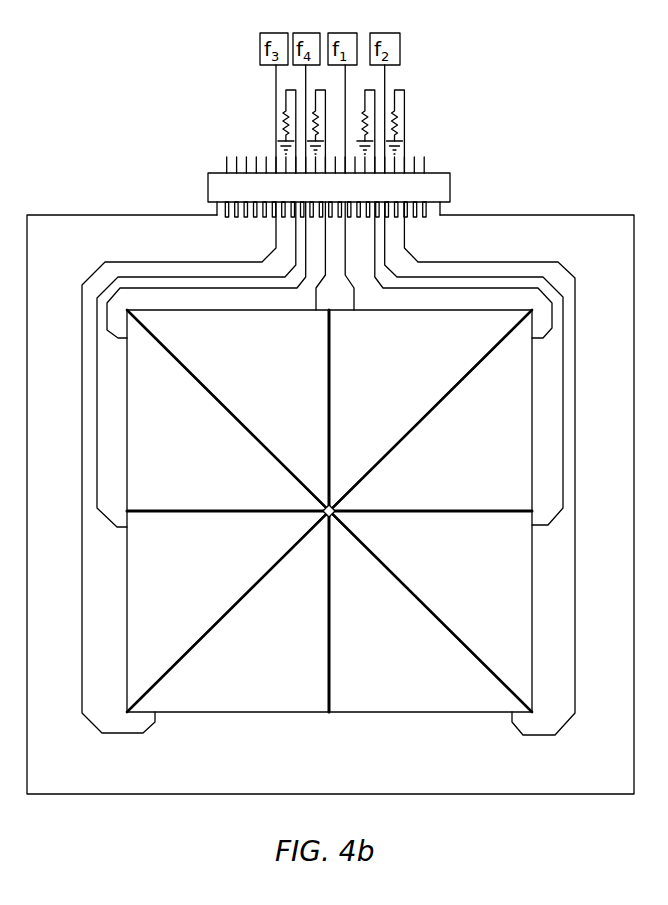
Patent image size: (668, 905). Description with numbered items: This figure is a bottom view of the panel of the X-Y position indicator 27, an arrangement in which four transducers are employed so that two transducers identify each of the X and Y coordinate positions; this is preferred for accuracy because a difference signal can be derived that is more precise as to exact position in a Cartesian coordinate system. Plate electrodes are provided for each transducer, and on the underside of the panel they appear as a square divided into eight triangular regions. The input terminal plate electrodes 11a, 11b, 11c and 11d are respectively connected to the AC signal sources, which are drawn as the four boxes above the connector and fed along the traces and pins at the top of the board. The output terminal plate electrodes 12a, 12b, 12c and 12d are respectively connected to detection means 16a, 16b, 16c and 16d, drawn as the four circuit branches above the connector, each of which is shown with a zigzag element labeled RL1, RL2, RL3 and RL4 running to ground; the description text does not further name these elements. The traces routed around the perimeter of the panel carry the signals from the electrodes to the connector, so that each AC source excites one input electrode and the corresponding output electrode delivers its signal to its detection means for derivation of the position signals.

The X-Y position indicator 27 is at (157, 196).
The input terminal plate electrode 11a is at (433, 330).
The input terminal plate electrode 11b is at (508, 588).
The input terminal plate electrode 11c is at (275, 693).
The input terminal plate electrode 11d is at (135, 427).
The output terminal plate electrode 12a is at (232, 328).
The output terminal plate electrode 12b is at (518, 430).
The output terminal plate electrode 12c is at (425, 692).
The output terminal plate electrode 12d is at (145, 575).
The detection means 16a is at (286, 110).
The detection means 16b is at (363, 103).
The detection means 16c is at (397, 100).
The detection means 16d is at (314, 103).
The load resistor RL1 is at (315, 117).
The load resistor RL2 is at (367, 123).
The load resistor RL3 is at (398, 130).
The load resistor RL4 is at (286, 127).